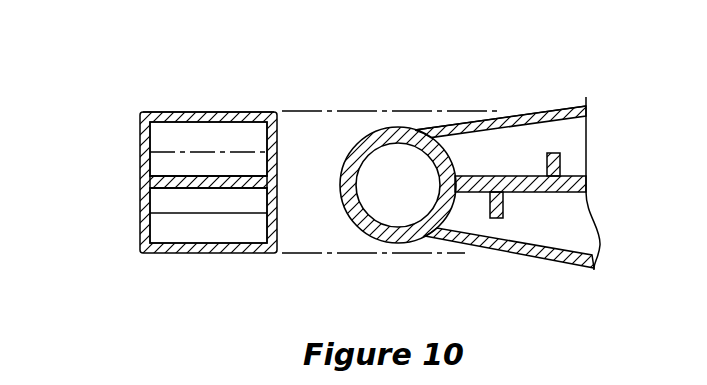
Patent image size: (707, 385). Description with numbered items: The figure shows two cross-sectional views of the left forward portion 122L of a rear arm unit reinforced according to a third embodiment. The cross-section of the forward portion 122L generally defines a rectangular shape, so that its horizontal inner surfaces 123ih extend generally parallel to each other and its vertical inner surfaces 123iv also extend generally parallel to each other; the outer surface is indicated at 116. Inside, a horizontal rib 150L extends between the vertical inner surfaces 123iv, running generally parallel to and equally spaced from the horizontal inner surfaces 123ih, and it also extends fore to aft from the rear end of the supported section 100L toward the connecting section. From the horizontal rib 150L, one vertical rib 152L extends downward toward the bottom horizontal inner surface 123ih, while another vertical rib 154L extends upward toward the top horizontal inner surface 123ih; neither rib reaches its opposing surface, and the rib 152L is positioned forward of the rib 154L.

The supported section 100L is at (386, 240).
The outer surface of housing 116 is at (255, 102).
The forward portion 122L is at (143, 225).
The horizontal inner surfaces 123ih is at (252, 144).
The vertical inner surfaces 123iv is at (254, 232).
The horizontal rib 150L is at (182, 178).
The vertical rib 152L is at (193, 203).
The vertical rib 154L is at (185, 158).